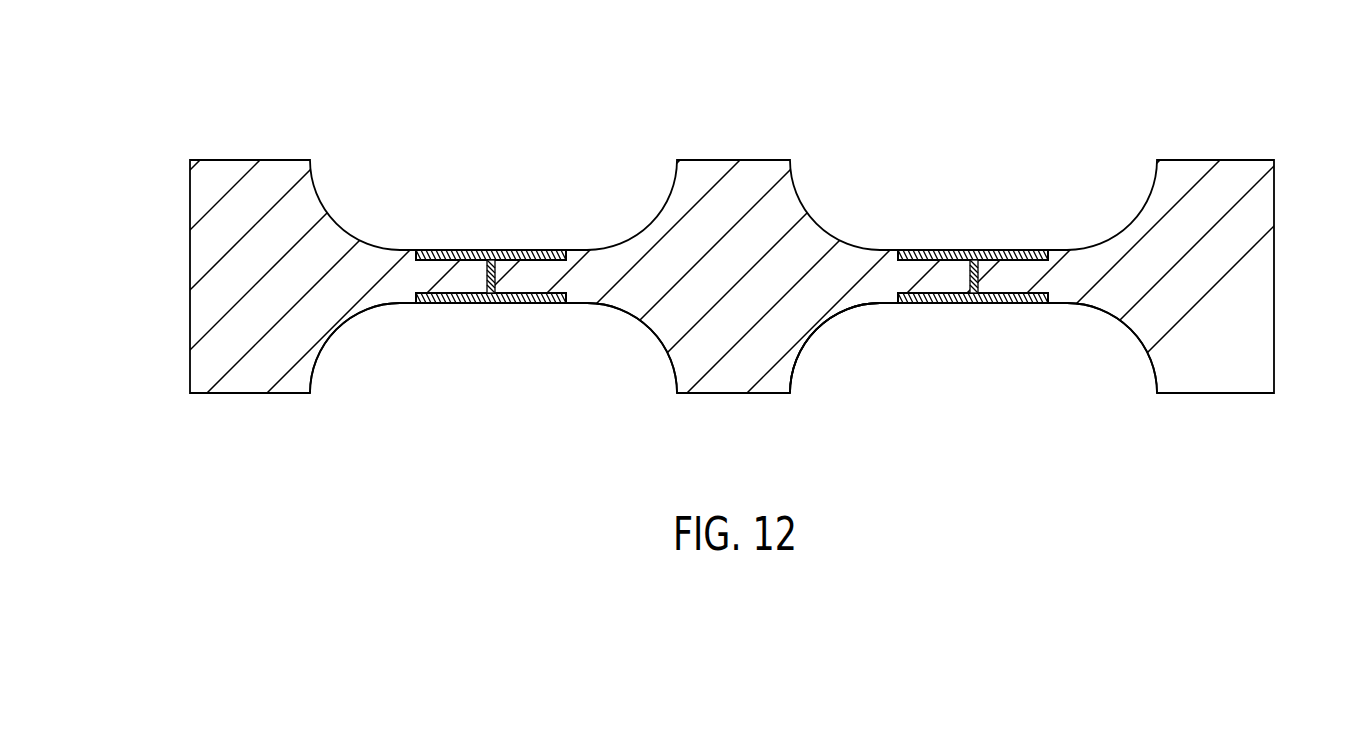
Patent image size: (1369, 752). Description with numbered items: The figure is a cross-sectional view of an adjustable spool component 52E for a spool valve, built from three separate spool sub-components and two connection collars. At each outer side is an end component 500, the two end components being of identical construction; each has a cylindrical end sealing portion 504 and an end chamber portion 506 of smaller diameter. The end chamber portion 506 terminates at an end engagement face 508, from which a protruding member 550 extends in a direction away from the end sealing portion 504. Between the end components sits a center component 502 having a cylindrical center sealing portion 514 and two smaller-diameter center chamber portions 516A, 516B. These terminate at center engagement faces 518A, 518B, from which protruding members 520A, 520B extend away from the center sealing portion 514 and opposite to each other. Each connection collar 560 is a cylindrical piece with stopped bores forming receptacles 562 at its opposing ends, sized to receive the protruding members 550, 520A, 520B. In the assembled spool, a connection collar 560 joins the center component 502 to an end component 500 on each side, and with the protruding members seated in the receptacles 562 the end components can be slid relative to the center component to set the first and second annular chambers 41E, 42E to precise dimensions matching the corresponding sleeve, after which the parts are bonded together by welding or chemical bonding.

The adjustable spool component 52E is at (675, 256).
The first annular chamber 41E is at (483, 305).
The second annular chamber 42E is at (982, 305).
The end component 500 is at (215, 388).
The center component 502 is at (735, 394).
The end sealing portion 504 is at (280, 394).
The end chamber portion 506 is at (332, 333).
The end engagement face 508 is at (427, 250).
The center sealing portion 514 is at (765, 390).
The first center chamber portion 516A is at (613, 311).
The second center chamber portion 516B is at (853, 311).
The first center engagement face 518A is at (557, 250).
The second center engagement face 518B is at (908, 250).
The first center protruding member 520A is at (509, 250).
The second center protruding member 520B is at (960, 250).
The protruding member 550 is at (468, 270).
The connection collar 560 is at (489, 305).
The receptacle 562 is at (447, 305).